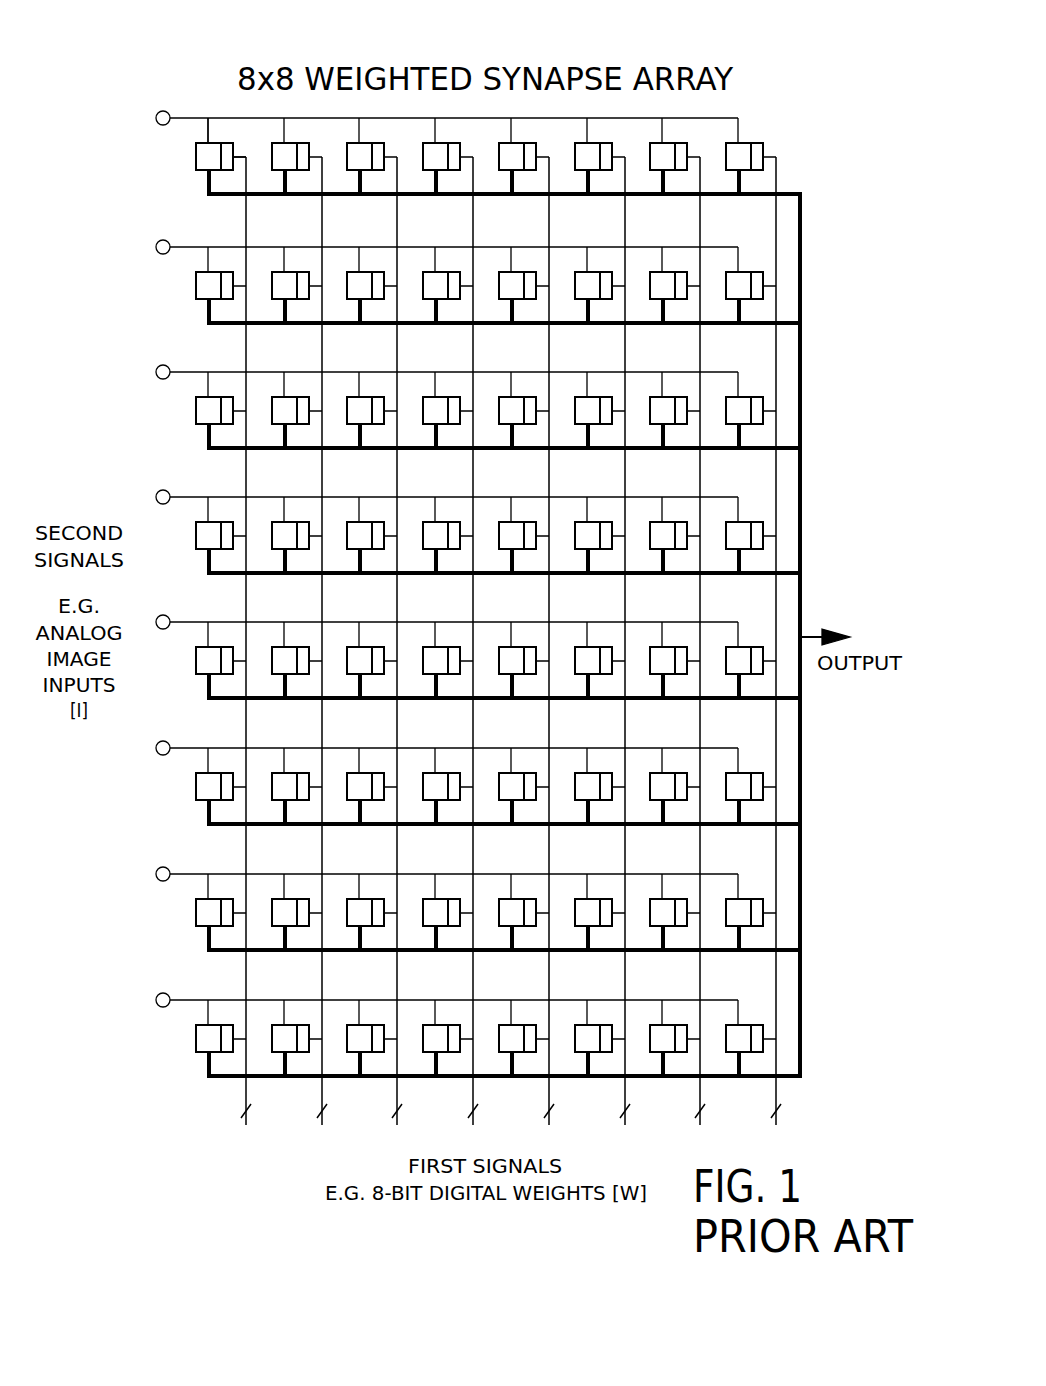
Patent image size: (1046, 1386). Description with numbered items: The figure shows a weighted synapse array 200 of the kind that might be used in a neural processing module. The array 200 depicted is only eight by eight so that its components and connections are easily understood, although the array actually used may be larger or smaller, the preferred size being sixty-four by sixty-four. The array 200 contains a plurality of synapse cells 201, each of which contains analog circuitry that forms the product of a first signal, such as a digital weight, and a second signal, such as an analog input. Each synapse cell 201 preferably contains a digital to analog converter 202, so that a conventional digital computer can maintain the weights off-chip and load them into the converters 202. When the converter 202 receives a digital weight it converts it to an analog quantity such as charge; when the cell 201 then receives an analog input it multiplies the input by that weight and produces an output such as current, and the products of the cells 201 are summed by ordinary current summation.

The weighted synapse array 200 is at (758, 125).
The synapse cell 201 is at (196, 158).
The digital to analog converter 202 is at (236, 152).